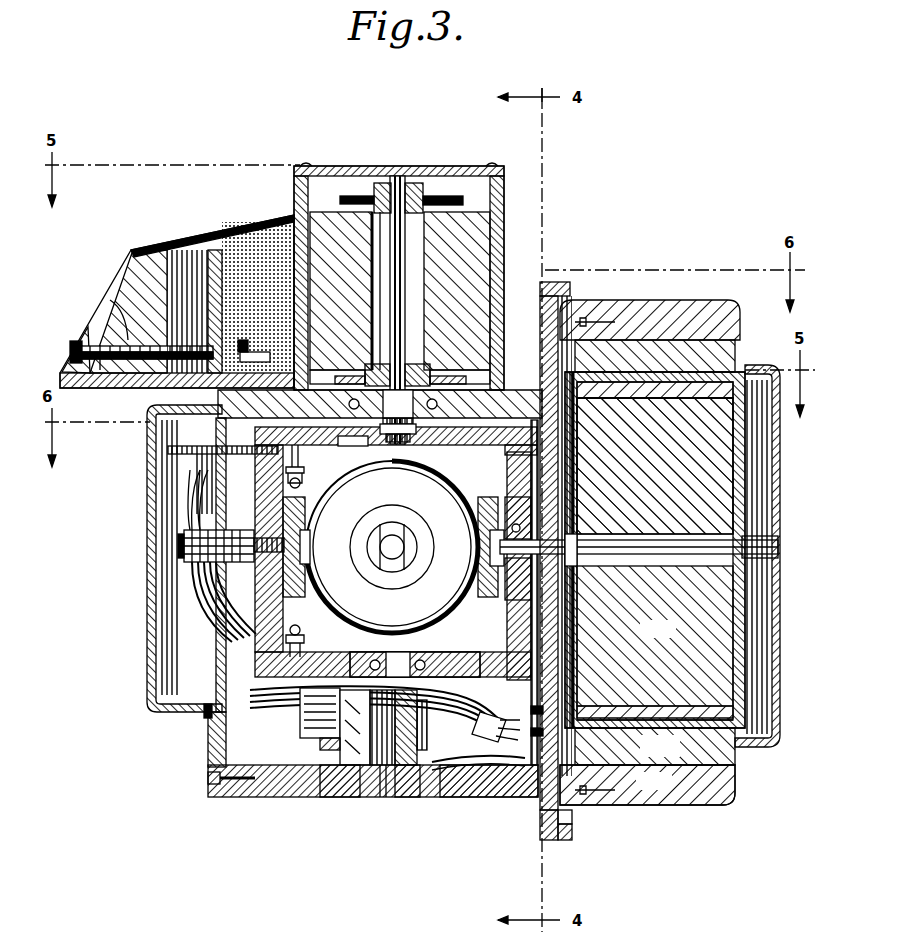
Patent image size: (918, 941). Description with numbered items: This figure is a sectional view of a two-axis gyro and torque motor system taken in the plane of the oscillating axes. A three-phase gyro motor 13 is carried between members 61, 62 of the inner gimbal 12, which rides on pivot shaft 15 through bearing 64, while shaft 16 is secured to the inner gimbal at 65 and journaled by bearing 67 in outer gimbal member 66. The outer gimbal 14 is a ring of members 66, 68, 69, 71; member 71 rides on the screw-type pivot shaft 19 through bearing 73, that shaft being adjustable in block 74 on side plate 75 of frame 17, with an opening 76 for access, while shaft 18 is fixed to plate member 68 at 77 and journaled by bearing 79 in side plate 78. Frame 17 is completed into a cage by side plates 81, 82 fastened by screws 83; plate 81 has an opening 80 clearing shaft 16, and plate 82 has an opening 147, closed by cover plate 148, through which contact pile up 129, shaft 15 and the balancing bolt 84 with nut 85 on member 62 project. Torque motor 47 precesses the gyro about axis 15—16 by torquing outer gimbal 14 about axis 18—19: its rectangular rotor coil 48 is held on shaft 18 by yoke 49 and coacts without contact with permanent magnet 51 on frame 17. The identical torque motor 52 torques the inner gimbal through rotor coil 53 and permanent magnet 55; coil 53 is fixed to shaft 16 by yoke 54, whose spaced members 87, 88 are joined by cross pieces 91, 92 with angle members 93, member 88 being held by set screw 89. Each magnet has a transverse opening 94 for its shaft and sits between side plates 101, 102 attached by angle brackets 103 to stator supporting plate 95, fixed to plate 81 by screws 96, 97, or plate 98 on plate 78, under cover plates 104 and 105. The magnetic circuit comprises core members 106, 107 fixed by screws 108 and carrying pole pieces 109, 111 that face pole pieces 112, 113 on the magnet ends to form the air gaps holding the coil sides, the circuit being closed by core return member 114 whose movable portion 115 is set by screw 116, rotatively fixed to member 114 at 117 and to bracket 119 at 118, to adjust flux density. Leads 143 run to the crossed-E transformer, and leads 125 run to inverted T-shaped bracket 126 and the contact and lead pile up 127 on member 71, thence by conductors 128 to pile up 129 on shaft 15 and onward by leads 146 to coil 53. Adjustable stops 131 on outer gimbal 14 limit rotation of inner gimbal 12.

The inner gimbal 12 is at (478, 498).
The gyro motor 13 is at (458, 480).
The outer gimbal 14 is at (478, 446).
The pivot shaft 15 is at (246, 528).
The shaft 16 is at (582, 524).
The frame 17 is at (276, 798).
The shaft 18 is at (402, 324).
The pivot shaft 19 is at (384, 798).
The torque motor 47 is at (218, 226).
The rotor coil 48 is at (434, 190).
The yoke 49 is at (402, 180).
The permanent magnet 51 is at (502, 276).
The torque motor 52 is at (708, 806).
The rotor coil 53 is at (750, 470).
The yoke 54 is at (768, 580).
The permanent magnet 55 is at (664, 639).
The inner gimbal member 61 is at (440, 606).
The inner gimbal member 62 is at (506, 598).
The bearing 64 is at (306, 538).
The shaft securing point 65 is at (484, 598).
The outer gimbal member 66 is at (512, 452).
The bearing 67 is at (514, 496).
The outer gimbal plate member 68 is at (336, 444).
The outer gimbal member 69 is at (276, 475).
The outer gimbal member 71 is at (500, 658).
The bearing 73 is at (410, 656).
The block 74 is at (430, 780).
The side plate 75 is at (500, 798).
The opening 76 is at (412, 798).
The shaft securing point 77 is at (408, 442).
The side plate 78 is at (512, 390).
The bearing 79 is at (418, 368).
The opening 80 is at (532, 712).
The side plate 81 is at (532, 730).
The side plate 82 is at (230, 750).
The screws 83 is at (208, 776).
The bolt 84 is at (188, 450).
The nut 85 is at (200, 472).
The yoke member 87 is at (580, 512).
The yoke member 88 is at (736, 462).
The set screw 89 is at (768, 538).
The cross piece 91 is at (662, 392).
The cross piece 92 is at (658, 708).
The angle members 93 is at (582, 368).
The transverse opening 94 is at (426, 278).
The stator supporting plate 95 is at (560, 842).
The screw 96 is at (574, 826).
The screw 97 is at (574, 292).
The stator supporting plate 98 is at (118, 388).
The side plate 101 is at (296, 192).
The side plate 102 is at (502, 208).
The angle brackets 103 is at (268, 324).
The cover plate 104 is at (330, 168).
The cover plate 105 is at (774, 673).
The core member 106 is at (238, 220).
The core member 107 is at (664, 789).
The screws 108 is at (618, 310).
The pole piece 109 is at (668, 357).
The pole piece 111 is at (666, 755).
The pole piece 112 is at (636, 396).
The pole piece 113 is at (600, 710).
The core return member 114 is at (90, 332).
The movable portion 115 is at (130, 272).
The screw 116 is at (108, 302).
The rotative fixing point 117 is at (80, 342).
The rotative securing point 118 is at (244, 348).
The bracket 119 is at (222, 278).
The leads 125 is at (468, 712).
The inverted T-shaped bracket 126 is at (348, 775).
The contact and lead pile up 127 is at (302, 742).
The conductors 128 is at (204, 622).
The contact and lead pile up 129 is at (184, 512).
The adjustable stops 131 is at (306, 474).
The leads 143 is at (460, 766).
The leads 146 is at (574, 452).
The opening 147 is at (212, 726).
The cover plate 148 is at (150, 572).